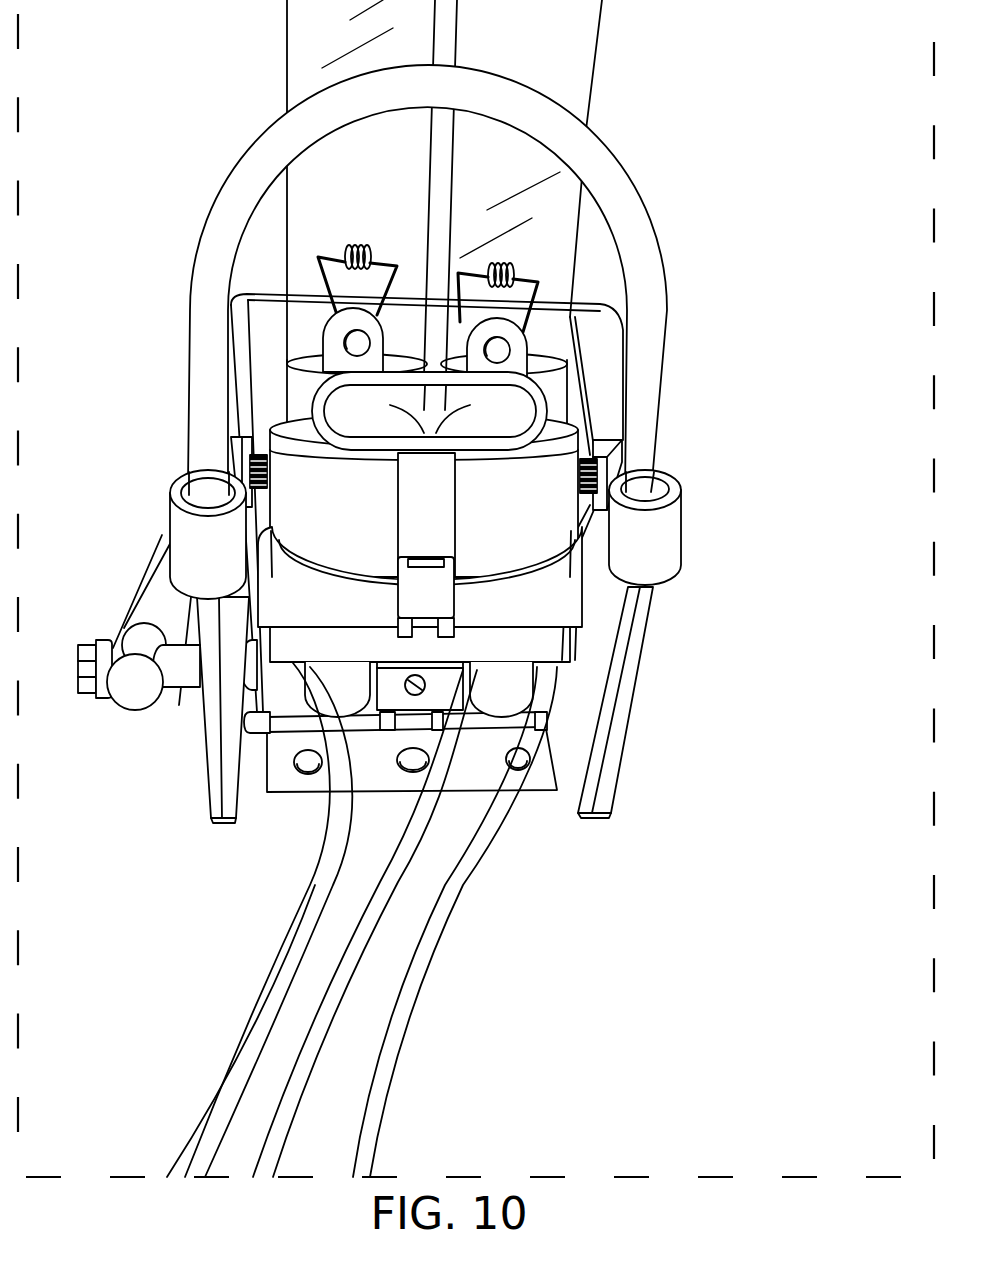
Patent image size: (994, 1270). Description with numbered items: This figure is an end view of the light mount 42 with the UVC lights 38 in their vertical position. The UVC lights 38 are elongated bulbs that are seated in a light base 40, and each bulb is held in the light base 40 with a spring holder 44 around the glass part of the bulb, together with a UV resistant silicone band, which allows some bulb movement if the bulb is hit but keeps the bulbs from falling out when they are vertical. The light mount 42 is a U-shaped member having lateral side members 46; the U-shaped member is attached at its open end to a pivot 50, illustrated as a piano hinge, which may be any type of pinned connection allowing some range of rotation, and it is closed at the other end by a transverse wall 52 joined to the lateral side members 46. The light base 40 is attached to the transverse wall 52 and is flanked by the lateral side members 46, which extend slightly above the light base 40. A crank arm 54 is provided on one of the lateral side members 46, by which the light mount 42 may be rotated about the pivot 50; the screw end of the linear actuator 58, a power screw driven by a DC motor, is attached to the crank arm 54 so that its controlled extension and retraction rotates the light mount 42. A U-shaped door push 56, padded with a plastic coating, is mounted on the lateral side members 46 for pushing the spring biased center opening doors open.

The UVC lights 38 is at (595, 97).
The light base 40 is at (573, 517).
The light mount 42 is at (703, 336).
The spring holder 44 is at (297, 393).
The lateral side members 46 is at (632, 725).
The pivot 50 is at (277, 722).
The transverse wall 52 is at (583, 304).
The crank arm 54 is at (179, 705).
The door push 56 is at (643, 202).
The linear actuator 58 is at (133, 687).